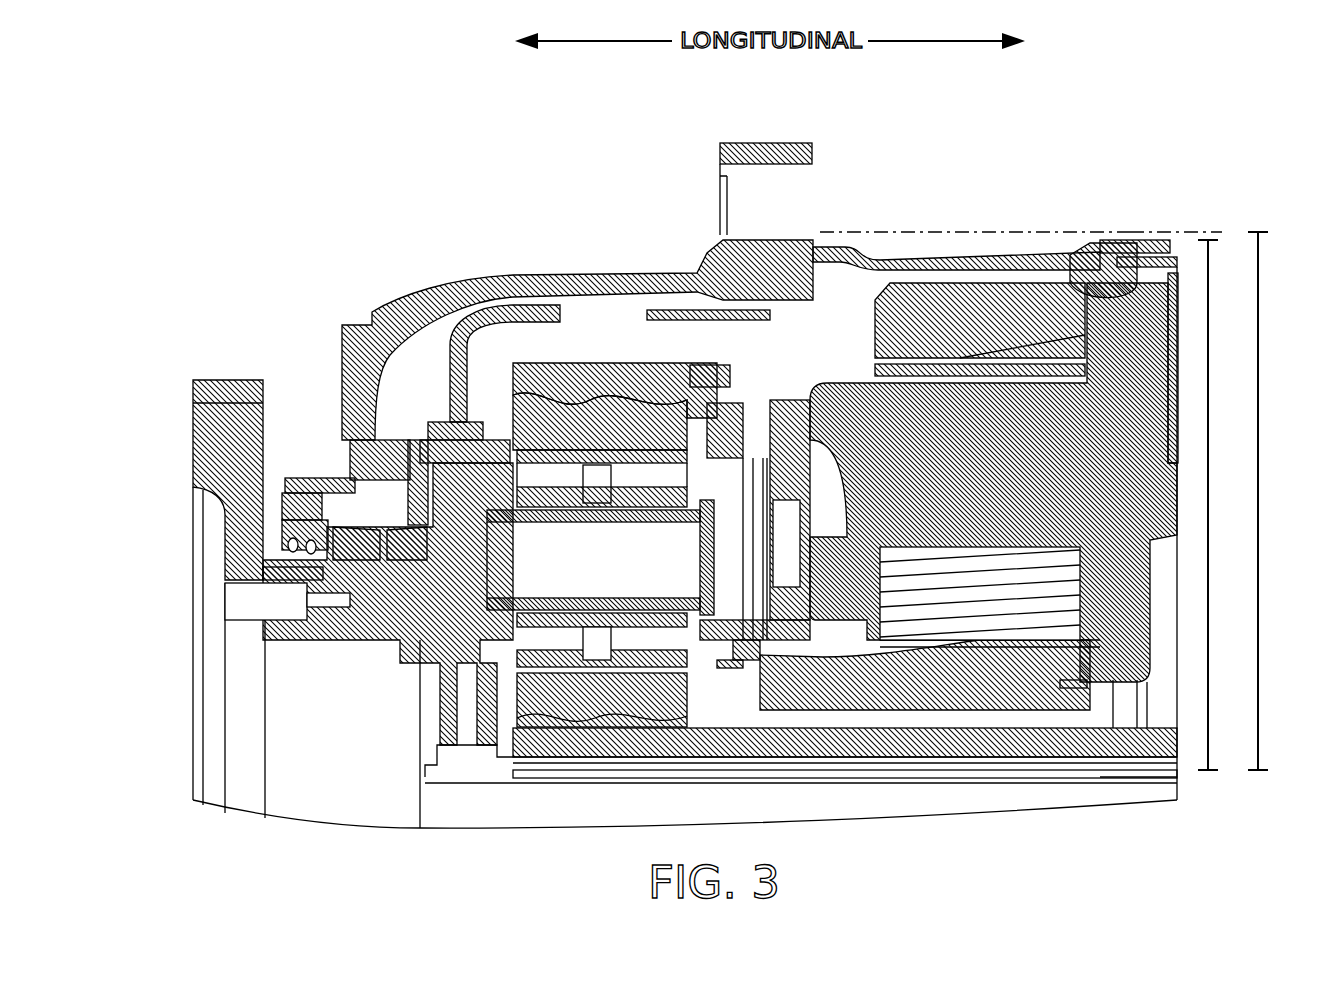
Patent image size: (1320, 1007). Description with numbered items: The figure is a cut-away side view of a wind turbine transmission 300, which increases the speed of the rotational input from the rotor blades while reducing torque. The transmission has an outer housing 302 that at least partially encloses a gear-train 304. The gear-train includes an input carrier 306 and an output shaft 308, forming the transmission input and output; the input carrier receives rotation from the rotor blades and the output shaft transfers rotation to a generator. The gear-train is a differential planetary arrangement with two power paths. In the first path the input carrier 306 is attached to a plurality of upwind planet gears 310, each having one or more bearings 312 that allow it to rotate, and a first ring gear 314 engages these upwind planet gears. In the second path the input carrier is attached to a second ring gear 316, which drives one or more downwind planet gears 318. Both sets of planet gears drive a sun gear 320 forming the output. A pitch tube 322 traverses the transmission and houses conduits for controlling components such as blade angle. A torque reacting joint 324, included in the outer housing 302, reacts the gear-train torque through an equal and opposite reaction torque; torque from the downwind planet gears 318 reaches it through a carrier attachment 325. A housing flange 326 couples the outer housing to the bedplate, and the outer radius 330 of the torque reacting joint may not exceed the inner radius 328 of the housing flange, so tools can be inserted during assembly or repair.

The transmission 300 is at (506, 172).
The outer housing 302 is at (500, 275).
The gear-train 304 is at (636, 338).
The input carrier 306 is at (205, 445).
The output shaft 308 is at (1100, 745).
The upwind planet gears 310 is at (517, 422).
The bearings 312 is at (652, 478).
The first ring gear 314 is at (540, 370).
The second ring gear 316 is at (962, 300).
The downwind planet gears 318 is at (888, 570).
The sun gear 320 is at (572, 728).
The pitch tube 322 is at (1155, 782).
The torque reacting joint 324 is at (1137, 229).
The carrier attachment 325 is at (1120, 315).
The housing flange 326 is at (790, 148).
The inner radius 328 is at (1258, 368).
The outer radius 330 is at (1208, 368).